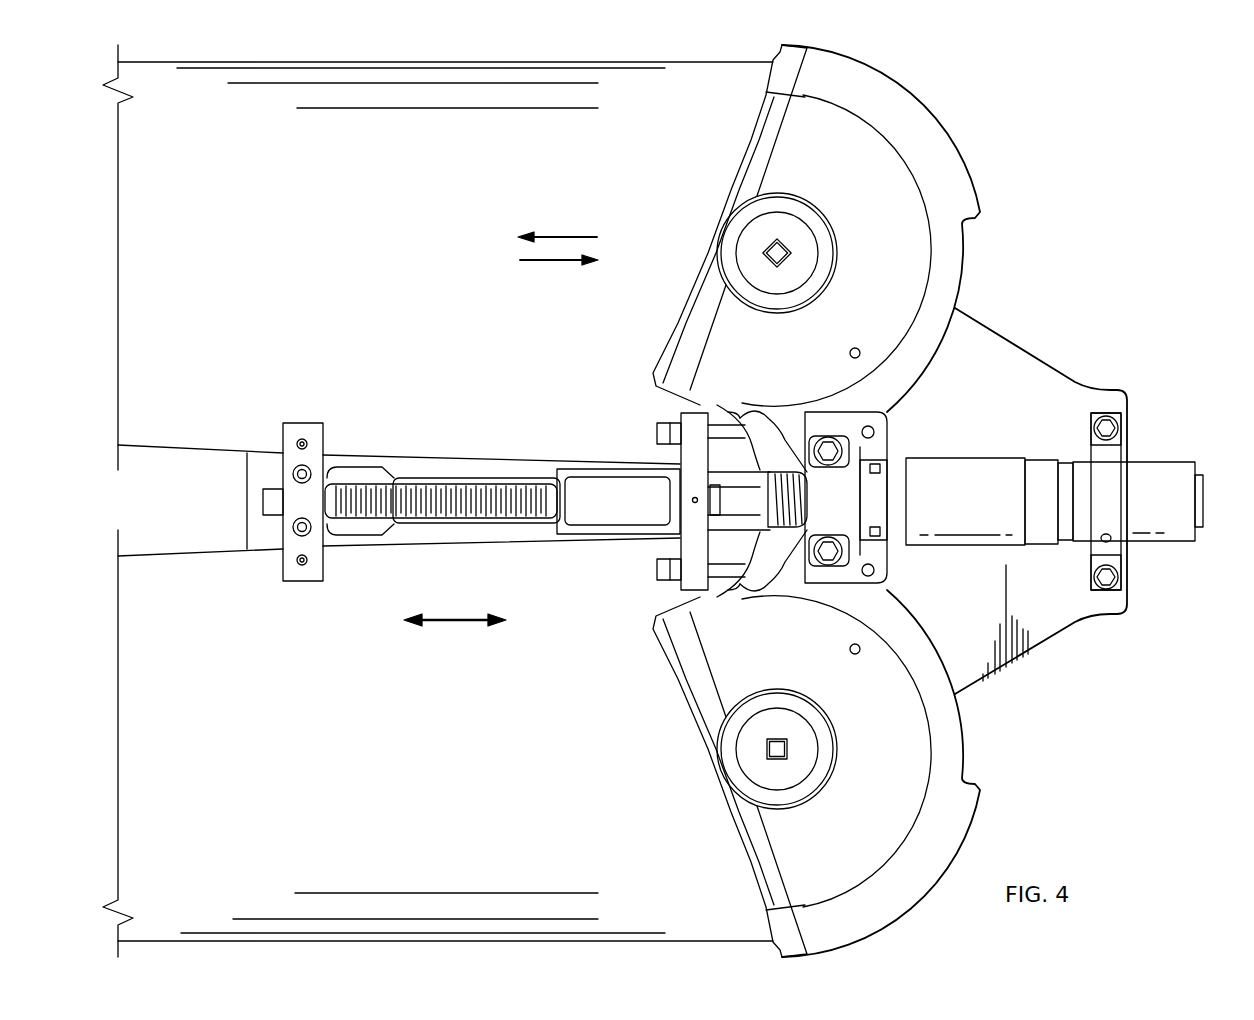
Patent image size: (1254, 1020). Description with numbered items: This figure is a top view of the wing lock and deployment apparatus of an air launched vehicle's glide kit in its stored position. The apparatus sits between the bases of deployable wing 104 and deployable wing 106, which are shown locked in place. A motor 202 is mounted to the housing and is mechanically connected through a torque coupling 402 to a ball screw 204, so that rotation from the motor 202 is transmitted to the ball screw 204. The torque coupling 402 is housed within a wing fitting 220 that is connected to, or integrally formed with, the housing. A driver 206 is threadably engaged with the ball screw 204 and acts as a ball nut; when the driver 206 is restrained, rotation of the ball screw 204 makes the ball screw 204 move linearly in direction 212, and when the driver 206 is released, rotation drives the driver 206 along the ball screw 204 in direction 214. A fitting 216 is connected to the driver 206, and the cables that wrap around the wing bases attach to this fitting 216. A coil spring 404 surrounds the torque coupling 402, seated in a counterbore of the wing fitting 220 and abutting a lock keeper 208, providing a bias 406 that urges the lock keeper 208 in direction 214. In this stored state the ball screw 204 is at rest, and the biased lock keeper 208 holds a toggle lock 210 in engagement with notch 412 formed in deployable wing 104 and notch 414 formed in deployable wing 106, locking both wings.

The deployable wing 104 is at (448, 817).
The deployable wing 106 is at (415, 252).
The motor 202 is at (1005, 457).
The ball screw 204 is at (443, 484).
The driver 206 is at (585, 478).
The lock keeper 208 is at (690, 497).
The toggle lock 210 is at (668, 428).
The direction 212 is at (560, 262).
The direction 214 is at (575, 232).
The fitting 216 is at (688, 543).
The wing fitting 220 is at (883, 480).
The torque coupling 402 is at (790, 565).
The spring 404 is at (790, 440).
The bias 406 is at (455, 645).
The notch 412 is at (740, 575).
The notch 414 is at (740, 430).